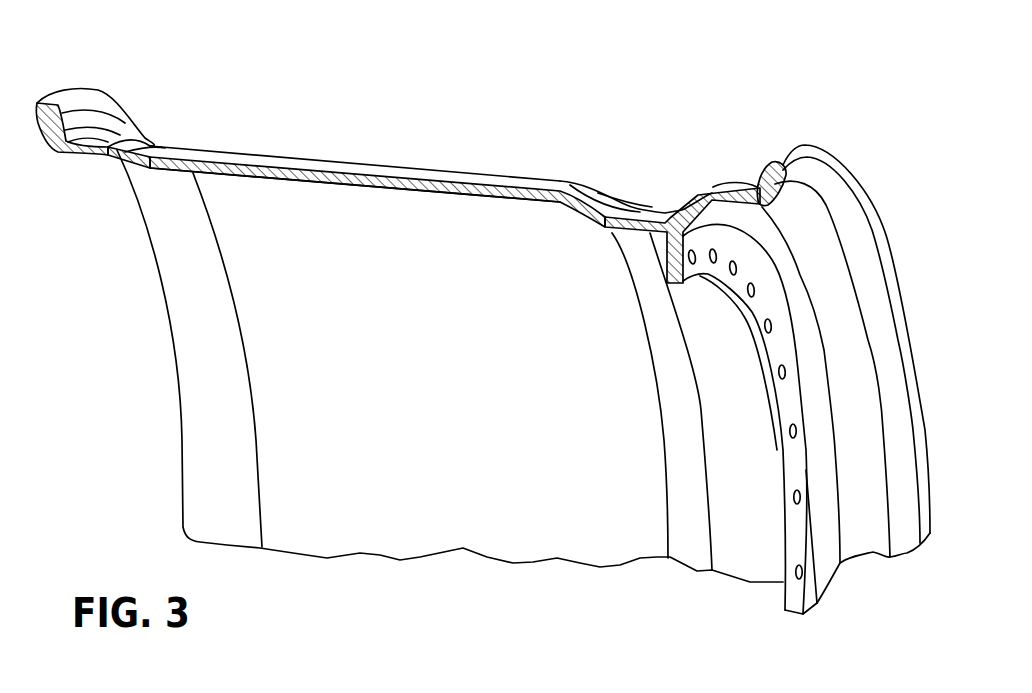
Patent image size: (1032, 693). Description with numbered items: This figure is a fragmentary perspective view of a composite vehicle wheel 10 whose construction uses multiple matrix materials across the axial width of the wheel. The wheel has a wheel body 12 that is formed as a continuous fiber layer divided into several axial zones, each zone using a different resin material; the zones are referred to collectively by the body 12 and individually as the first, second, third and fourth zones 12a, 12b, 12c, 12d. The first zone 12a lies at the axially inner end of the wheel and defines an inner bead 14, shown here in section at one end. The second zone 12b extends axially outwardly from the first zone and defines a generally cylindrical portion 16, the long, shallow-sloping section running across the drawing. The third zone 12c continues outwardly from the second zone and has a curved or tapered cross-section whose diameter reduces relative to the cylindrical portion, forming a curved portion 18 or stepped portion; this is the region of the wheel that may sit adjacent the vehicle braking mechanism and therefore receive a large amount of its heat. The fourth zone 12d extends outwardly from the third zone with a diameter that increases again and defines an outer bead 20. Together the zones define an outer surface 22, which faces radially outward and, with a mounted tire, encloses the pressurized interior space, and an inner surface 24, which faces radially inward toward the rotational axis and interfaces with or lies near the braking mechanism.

The vehicle wheel 10 is at (752, 106).
The wheel body 12 is at (171, 332).
The first zone 12a is at (107, 152).
The second zone 12b is at (240, 153).
The third zone 12c is at (598, 186).
The fourth zone 12d is at (742, 184).
The inner bead 14 is at (47, 103).
The cylindrical portion 16 is at (329, 166).
The curved portion 18 is at (577, 181).
The outer bead 20 is at (833, 170).
The outer surface 22 is at (481, 71).
The inner surface 24 is at (347, 182).